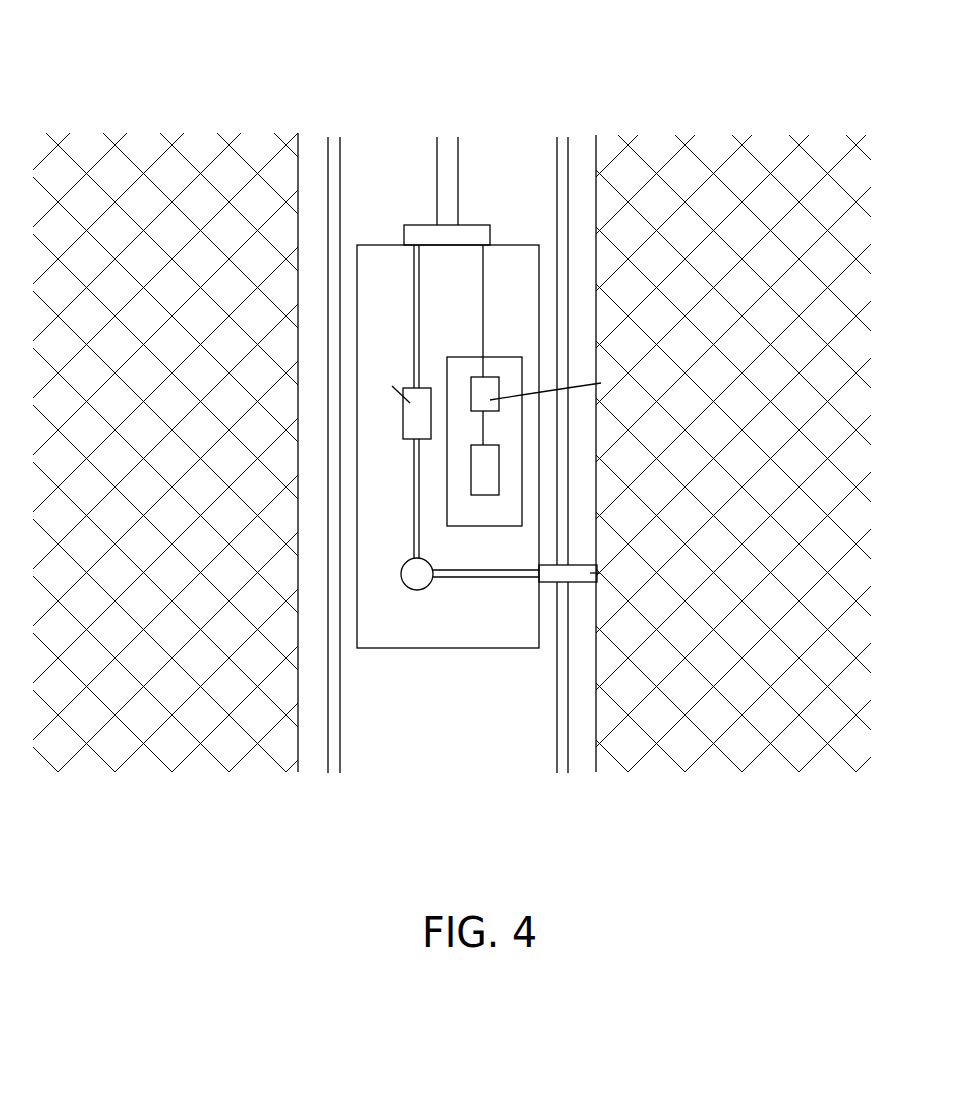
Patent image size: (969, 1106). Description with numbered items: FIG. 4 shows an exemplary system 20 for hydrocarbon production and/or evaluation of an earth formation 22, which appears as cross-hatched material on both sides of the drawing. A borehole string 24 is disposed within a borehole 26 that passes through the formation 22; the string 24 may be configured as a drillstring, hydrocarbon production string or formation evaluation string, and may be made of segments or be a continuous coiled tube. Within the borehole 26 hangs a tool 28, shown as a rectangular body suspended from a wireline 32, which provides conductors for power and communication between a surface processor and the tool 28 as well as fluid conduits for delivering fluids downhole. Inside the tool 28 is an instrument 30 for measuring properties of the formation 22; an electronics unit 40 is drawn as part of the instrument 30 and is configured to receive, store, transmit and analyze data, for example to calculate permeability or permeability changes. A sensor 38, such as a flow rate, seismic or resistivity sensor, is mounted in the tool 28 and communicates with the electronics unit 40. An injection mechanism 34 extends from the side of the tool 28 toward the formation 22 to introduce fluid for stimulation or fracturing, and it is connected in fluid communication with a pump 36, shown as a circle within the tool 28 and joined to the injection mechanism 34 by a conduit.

The system 20 is at (276, 49).
The earth formation 22 is at (484, 452).
The borehole string 24 is at (562, 163).
The borehole 26 is at (312, 170).
The tool 28 is at (408, 633).
The instrument 30 is at (461, 365).
The wireline 32 is at (450, 177).
The injection mechanism 34 is at (575, 570).
The pump 36 is at (410, 568).
The sensor 38 is at (480, 482).
The electronics unit 40 is at (488, 393).